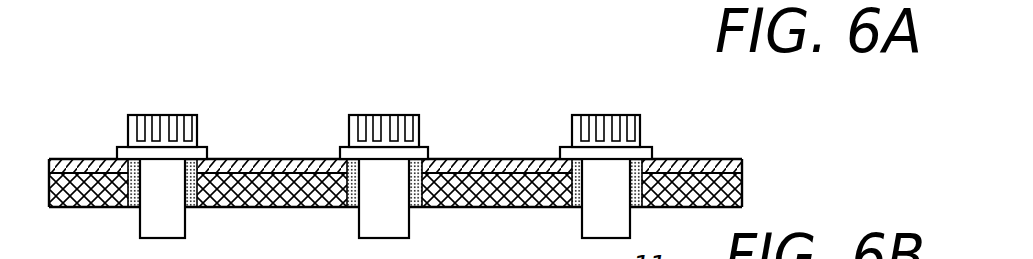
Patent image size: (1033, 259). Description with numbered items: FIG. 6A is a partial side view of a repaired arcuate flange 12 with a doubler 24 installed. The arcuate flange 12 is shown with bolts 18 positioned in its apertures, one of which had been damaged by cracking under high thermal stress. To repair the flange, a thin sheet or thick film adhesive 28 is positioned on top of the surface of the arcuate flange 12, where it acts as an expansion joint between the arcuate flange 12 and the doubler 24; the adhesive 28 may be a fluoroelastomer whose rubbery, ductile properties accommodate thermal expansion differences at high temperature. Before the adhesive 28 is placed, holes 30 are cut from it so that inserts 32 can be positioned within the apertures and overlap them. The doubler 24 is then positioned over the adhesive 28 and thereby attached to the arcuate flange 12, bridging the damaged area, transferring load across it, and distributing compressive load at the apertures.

The arcuate flange 12 is at (437, 164).
The bolt 18 is at (400, 113).
The doubler 24 is at (232, 158).
The adhesive 28 is at (302, 163).
The holes 30 is at (668, 168).
The inserts 32 is at (328, 205).